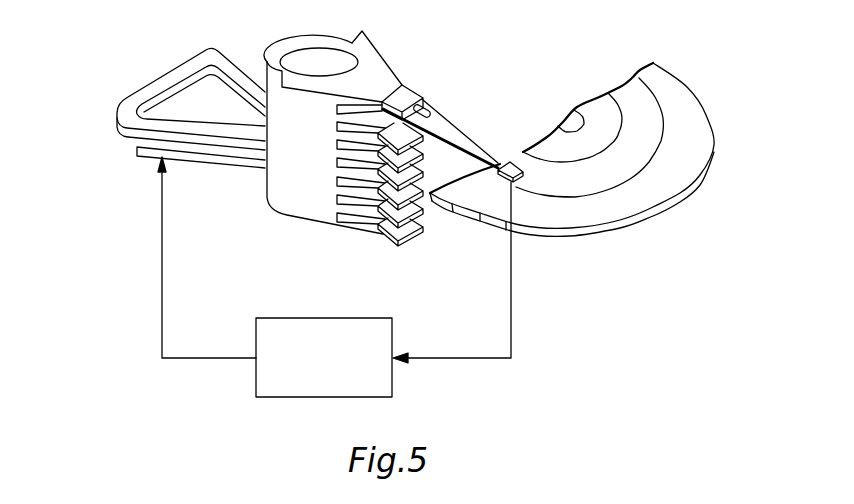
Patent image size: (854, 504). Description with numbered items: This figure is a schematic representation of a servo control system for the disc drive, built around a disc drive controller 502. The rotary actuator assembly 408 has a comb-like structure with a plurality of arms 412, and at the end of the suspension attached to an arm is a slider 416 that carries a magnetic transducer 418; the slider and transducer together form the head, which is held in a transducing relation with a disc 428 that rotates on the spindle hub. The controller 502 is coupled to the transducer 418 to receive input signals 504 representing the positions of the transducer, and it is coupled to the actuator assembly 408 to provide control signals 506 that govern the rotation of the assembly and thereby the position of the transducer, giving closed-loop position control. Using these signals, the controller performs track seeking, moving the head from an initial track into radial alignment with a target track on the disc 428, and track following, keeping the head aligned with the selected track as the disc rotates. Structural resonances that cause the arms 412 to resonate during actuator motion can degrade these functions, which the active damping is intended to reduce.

The rotary actuator assembly 408 is at (234, 168).
The arms 412 is at (447, 132).
The slider 416 is at (523, 226).
The magnetic transducer 418 is at (510, 162).
The disc 428 is at (680, 102).
The disc drive controller 502 is at (363, 318).
The input signals 504 is at (512, 316).
The control signals 506 is at (161, 316).